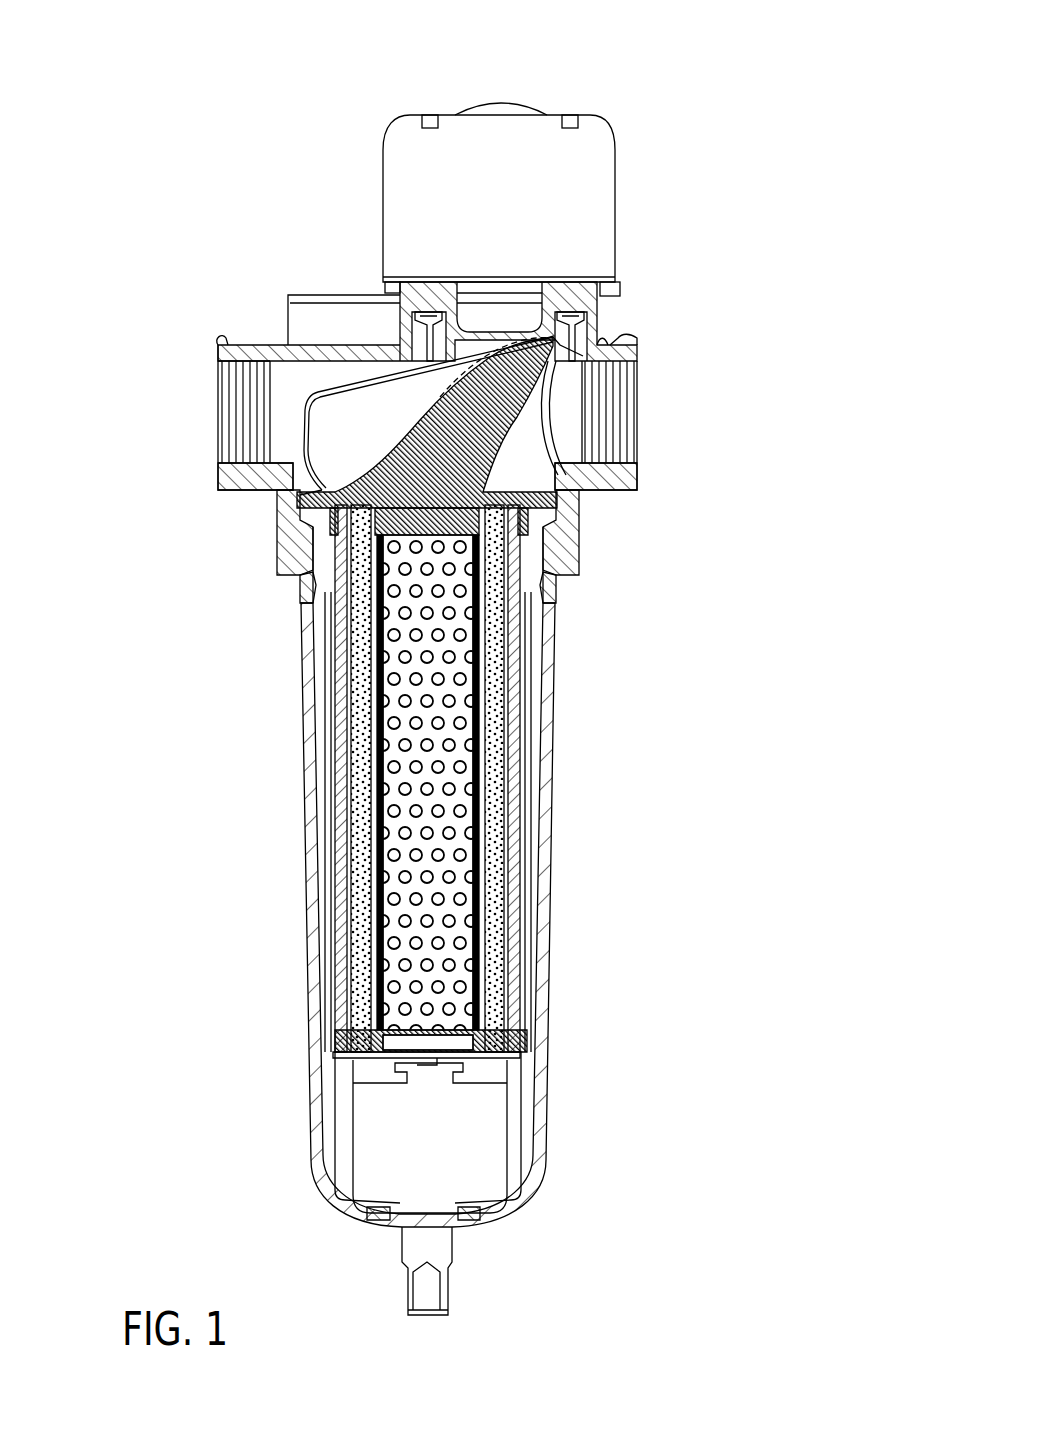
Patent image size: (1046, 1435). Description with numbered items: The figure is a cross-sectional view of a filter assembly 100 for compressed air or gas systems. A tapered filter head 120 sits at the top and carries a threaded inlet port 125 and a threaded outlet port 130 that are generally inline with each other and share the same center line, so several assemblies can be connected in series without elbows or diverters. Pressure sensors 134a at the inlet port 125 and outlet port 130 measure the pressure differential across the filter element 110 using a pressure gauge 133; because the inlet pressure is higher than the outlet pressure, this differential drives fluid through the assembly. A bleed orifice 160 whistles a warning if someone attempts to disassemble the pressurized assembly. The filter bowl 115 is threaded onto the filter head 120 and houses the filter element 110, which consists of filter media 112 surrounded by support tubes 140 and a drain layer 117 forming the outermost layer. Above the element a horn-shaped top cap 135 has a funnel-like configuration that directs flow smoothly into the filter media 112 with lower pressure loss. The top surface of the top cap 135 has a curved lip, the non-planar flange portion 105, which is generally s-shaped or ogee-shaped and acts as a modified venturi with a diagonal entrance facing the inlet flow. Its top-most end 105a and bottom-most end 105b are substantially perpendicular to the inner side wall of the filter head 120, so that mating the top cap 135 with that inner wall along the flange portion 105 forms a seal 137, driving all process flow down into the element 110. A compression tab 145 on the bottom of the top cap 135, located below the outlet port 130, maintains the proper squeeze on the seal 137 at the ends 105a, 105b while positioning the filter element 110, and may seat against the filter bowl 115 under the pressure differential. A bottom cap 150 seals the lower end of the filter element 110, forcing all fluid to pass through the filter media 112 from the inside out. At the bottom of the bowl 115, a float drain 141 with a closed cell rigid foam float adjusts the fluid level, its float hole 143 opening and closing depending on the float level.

The filter assembly 100 is at (556, 48).
The pressure gauge 133 is at (615, 187).
The pressure sensors 134a is at (430, 312).
The non-planar flange portion 105 is at (407, 430).
The top-most end 105a is at (585, 358).
The bottom-most end 105b is at (277, 503).
The tapered filter head 120 is at (620, 341).
The inlet port 125 is at (215, 470).
The outlet port 130 is at (620, 447).
The top cap 135 is at (552, 378).
The seal 137 is at (540, 385).
The compression tab 145 is at (560, 505).
The bleed orifice 160 is at (284, 572).
The filter element 110 is at (542, 873).
The filter media 112 is at (490, 790).
The drain layer 117 is at (515, 620).
The support tubes 140 is at (440, 755).
The filter bowl 115 is at (548, 1050).
The bottom cap 150 is at (455, 1043).
The float drain 141 is at (473, 1153).
The float hole 143 is at (433, 1292).